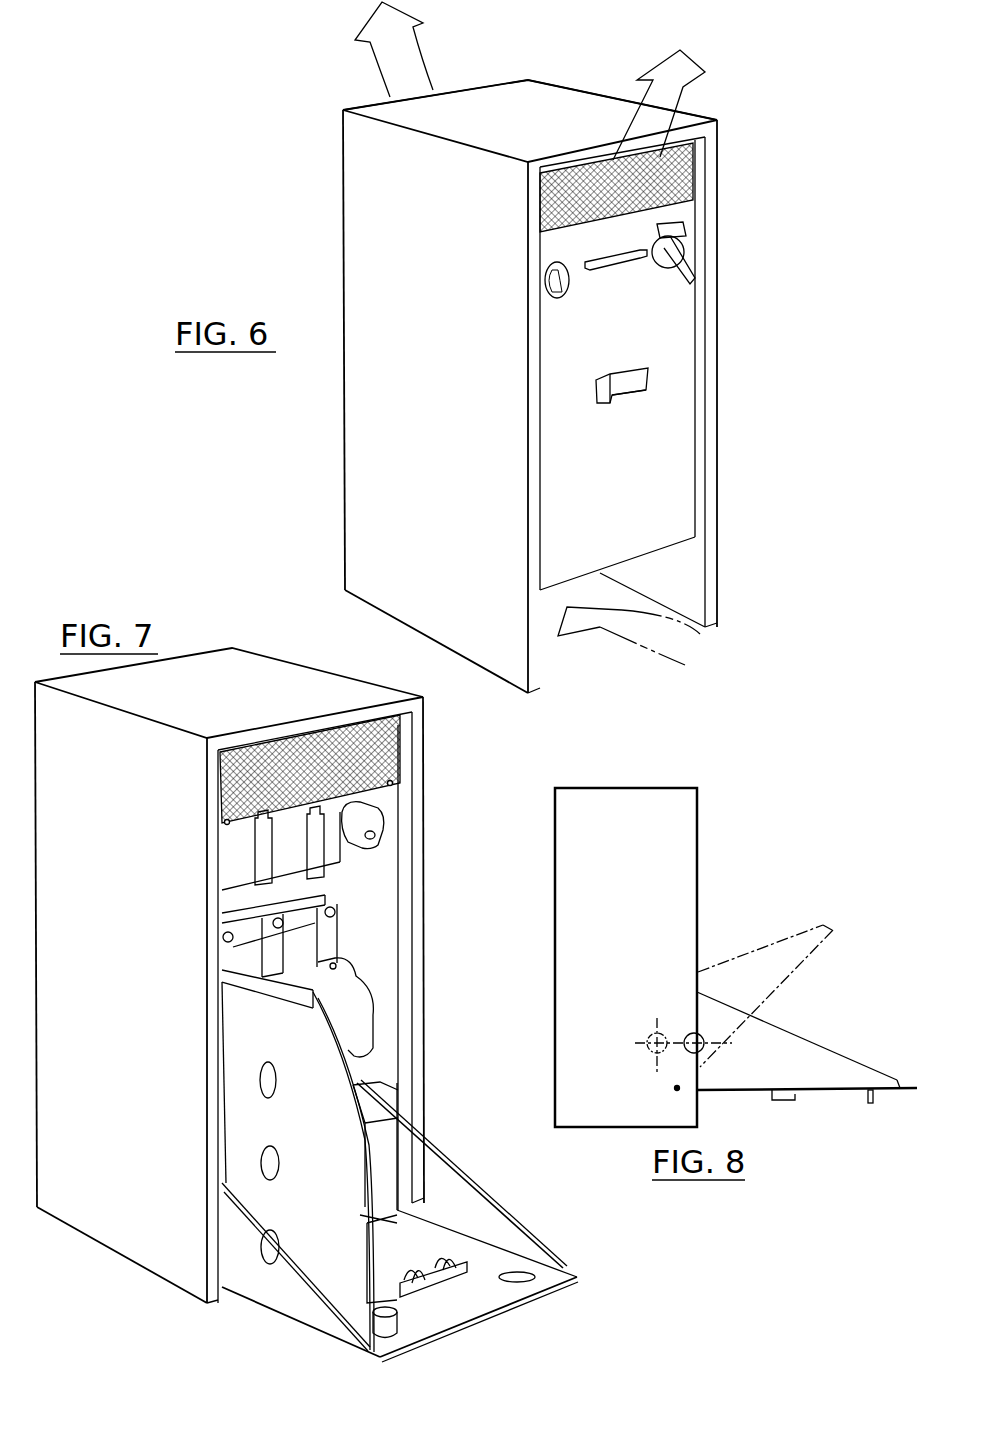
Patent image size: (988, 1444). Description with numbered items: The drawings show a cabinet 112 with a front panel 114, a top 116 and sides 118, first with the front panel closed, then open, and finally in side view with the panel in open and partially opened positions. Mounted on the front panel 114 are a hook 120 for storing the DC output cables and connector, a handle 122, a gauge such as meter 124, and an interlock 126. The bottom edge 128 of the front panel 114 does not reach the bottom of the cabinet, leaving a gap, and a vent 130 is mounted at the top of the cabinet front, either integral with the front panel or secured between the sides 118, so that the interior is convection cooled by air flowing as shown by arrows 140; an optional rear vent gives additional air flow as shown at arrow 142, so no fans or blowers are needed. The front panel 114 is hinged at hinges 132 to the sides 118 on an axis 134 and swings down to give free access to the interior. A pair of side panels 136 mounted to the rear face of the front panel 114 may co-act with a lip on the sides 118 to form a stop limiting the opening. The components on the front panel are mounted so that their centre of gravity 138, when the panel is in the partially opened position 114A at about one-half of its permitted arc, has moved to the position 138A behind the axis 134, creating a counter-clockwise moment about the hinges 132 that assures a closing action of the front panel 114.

In FIG. 6, the cabinet 112 is at (540, 55).
In FIG. 6, the front panel 114 is at (672, 401).
In FIG. 7, the front panel 114 is at (504, 1313).
In FIG. 8, the front panel 114 is at (907, 1087).
In FIG. 8, the front panel in partially opened position 114A is at (843, 917).
In FIG. 6, the top 116 is at (580, 100).
In FIG. 6, the sides 118 is at (710, 313).
In FIG. 6, the hook 120 is at (623, 392).
In FIG. 8, the hook 120 is at (785, 1101).
In FIG. 6, the handle 122 is at (625, 263).
In FIG. 8, the handle 122 is at (868, 1099).
In FIG. 6, the meter 124 is at (565, 287).
In FIG. 6, the interlock 126 is at (690, 267).
In FIG. 6, the bottom edge 128 is at (583, 578).
In FIG. 6, the vent 130 is at (687, 175).
In FIG. 7, the vent 130 is at (387, 757).
In FIG. 8, the hinges 132 is at (677, 1088).
In FIG. 7, the axis 134 is at (458, 1154).
In FIG. 7, the side panels 136 is at (283, 1295).
In FIG. 8, the side panels 136 is at (827, 1047).
In FIG. 8, the centre of gravity 138 is at (706, 1043).
In FIG. 8, the centre of gravity in partially opened position 138A is at (650, 1040).
In FIG. 6, the arrows 140 is at (695, 60).
In FIG. 6, the arrow 142 is at (390, 62).